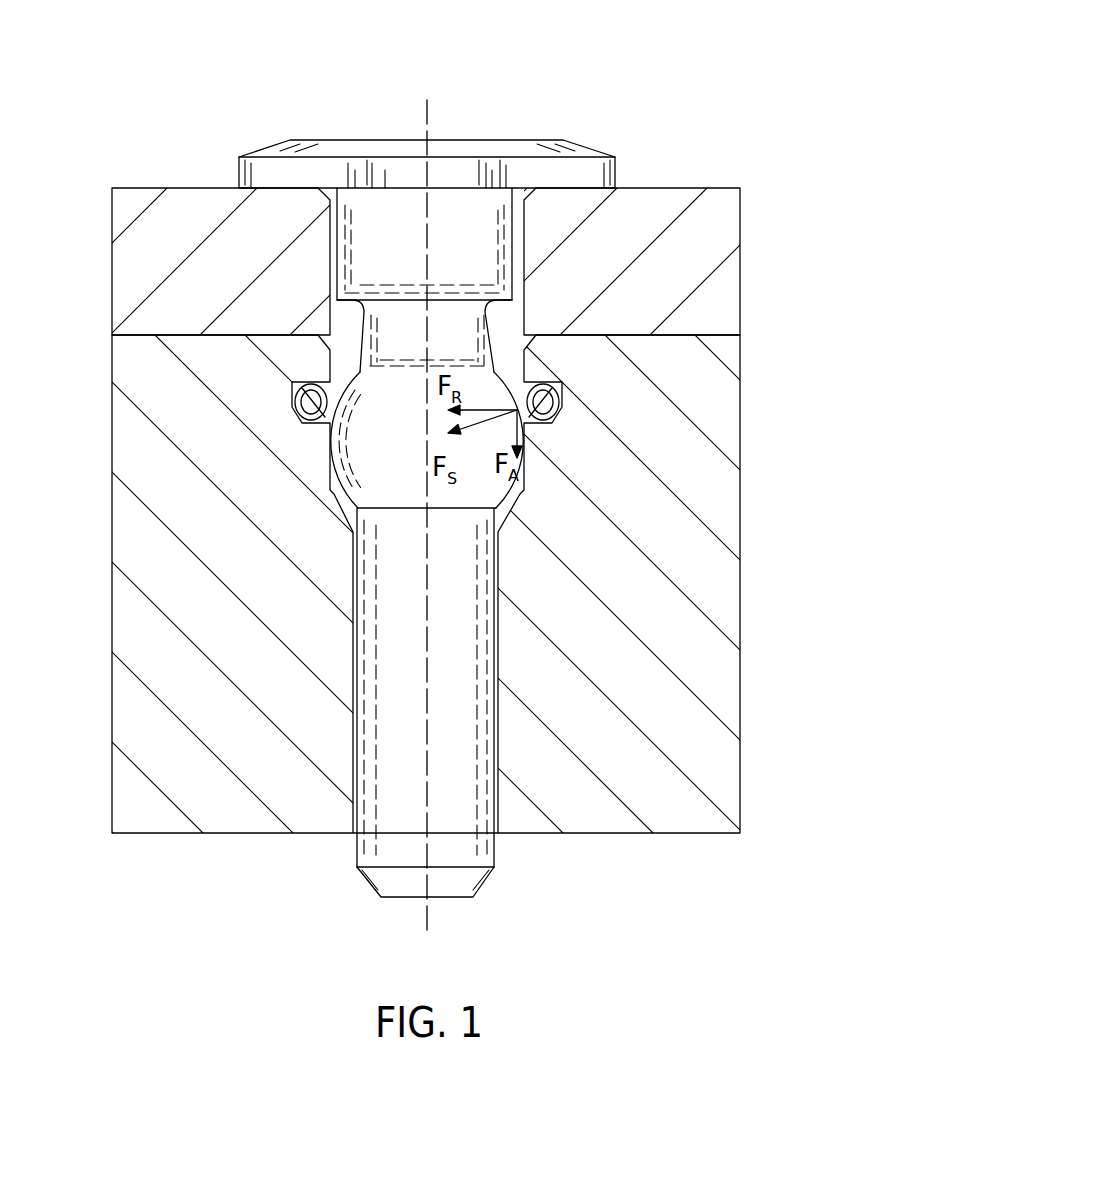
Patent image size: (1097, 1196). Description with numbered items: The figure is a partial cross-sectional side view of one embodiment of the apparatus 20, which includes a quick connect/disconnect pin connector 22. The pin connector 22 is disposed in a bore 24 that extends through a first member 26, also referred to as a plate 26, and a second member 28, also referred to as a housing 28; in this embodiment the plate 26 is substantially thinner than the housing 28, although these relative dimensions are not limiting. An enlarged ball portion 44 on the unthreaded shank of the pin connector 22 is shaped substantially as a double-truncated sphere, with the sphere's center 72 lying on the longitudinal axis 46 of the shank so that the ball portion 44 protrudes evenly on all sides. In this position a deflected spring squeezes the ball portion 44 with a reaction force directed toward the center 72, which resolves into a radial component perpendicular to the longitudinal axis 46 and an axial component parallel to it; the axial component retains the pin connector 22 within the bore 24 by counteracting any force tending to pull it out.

The apparatus 20 is at (812, 64).
The pin connector 22 is at (343, 139).
The bore 24 is at (331, 237).
The first member 26 is at (708, 263).
The second member 28 is at (673, 810).
The ball portion 44 is at (347, 386).
The longitudinal axis 46 is at (423, 842).
The center 72 is at (445, 448).